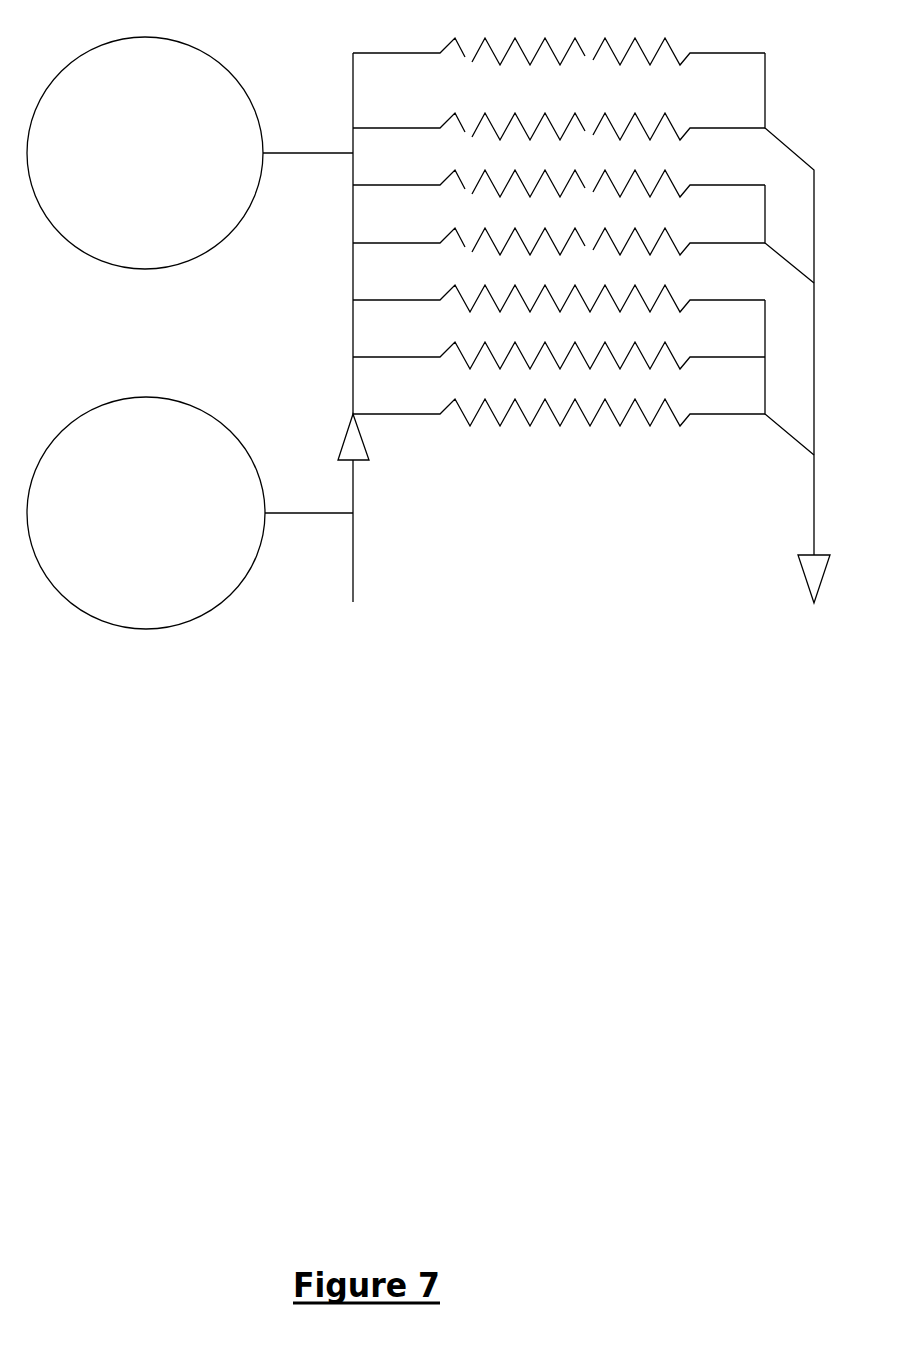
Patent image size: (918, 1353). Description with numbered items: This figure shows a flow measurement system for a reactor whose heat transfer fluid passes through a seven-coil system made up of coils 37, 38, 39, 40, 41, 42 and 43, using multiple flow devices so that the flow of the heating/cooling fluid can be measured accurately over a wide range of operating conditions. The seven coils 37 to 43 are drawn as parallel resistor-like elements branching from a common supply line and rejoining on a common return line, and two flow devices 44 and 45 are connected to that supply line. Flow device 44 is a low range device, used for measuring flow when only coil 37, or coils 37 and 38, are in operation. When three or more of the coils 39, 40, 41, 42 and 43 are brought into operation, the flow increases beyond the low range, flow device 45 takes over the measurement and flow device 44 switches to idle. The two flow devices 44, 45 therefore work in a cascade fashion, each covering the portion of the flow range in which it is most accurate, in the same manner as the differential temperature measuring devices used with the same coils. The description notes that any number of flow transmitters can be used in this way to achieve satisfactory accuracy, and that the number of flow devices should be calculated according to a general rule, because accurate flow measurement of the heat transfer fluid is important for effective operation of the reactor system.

The coil 37 is at (559, 38).
The coil 38 is at (559, 107).
The coil 39 is at (559, 167).
The coil 40 is at (559, 227).
The coil 41 is at (559, 287).
The coil 42 is at (559, 348).
The coil 43 is at (559, 406).
The flow device 44 is at (190, 153).
The flow device 45 is at (190, 513).